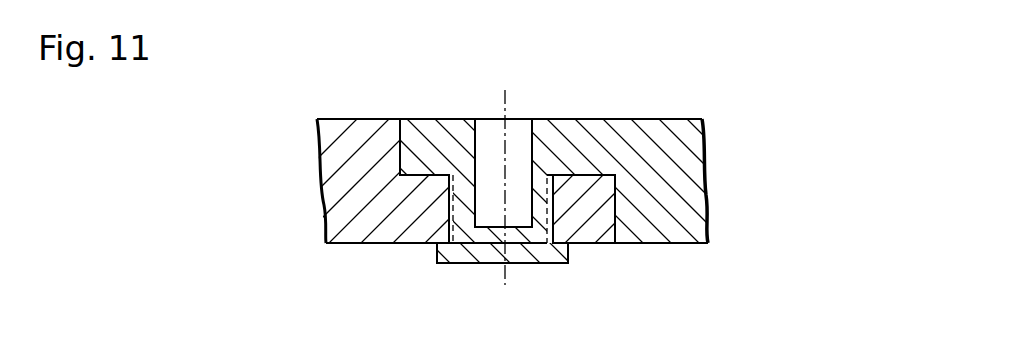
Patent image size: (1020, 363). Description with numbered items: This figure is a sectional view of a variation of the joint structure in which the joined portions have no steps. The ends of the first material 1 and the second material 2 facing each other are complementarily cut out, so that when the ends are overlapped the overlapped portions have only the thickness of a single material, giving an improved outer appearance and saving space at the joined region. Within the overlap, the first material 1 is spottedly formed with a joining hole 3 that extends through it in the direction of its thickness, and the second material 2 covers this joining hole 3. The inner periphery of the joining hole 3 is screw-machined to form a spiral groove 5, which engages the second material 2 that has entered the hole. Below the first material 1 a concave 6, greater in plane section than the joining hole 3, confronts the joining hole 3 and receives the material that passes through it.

The first material 1 is at (355, 148).
The second material 2 is at (686, 152).
The joining hole 3 is at (463, 217).
The groove 5 is at (543, 230).
The concave 6 is at (565, 265).